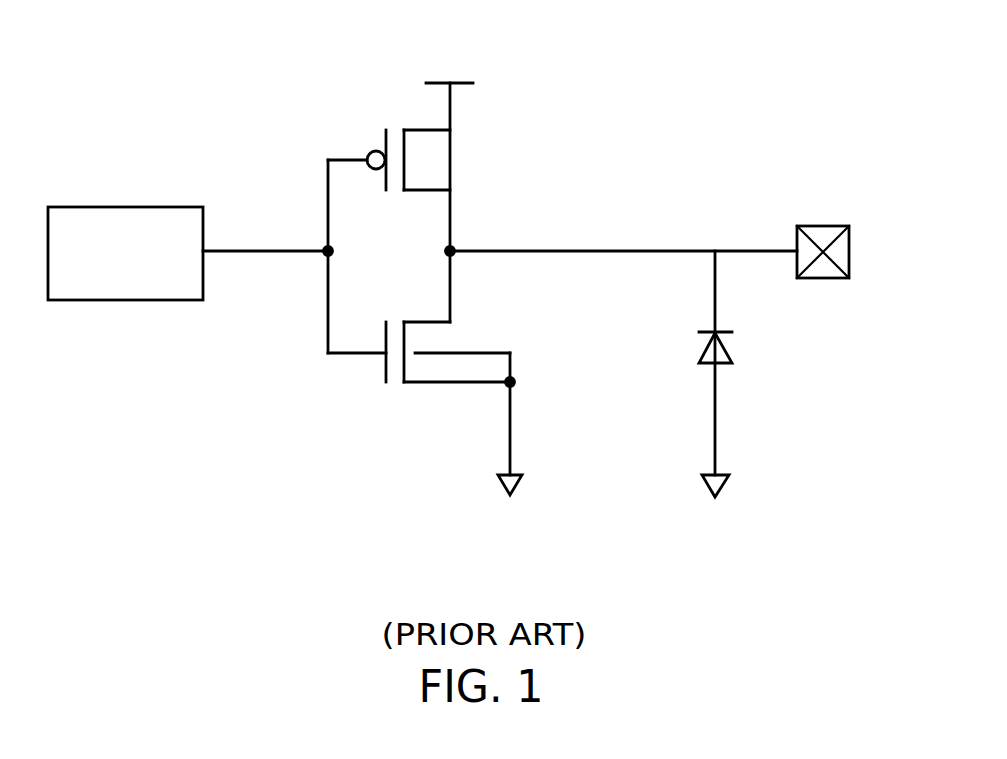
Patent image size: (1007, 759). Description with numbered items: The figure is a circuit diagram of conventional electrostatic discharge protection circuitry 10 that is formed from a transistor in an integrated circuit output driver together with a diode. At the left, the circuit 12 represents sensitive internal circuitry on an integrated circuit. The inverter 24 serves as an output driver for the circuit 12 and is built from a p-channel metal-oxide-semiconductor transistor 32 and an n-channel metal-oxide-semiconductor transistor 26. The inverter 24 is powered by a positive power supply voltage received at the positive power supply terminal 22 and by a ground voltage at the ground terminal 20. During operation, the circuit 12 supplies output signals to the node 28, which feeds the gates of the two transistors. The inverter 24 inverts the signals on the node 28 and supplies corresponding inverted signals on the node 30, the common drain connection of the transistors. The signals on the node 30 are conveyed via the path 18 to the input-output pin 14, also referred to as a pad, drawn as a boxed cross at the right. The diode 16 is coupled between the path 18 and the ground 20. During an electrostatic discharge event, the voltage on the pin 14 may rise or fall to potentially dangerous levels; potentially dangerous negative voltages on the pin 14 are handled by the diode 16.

The electrostatic discharge protection circuitry 10 is at (812, 116).
The circuit 12 is at (122, 207).
The input-output pin 14 is at (850, 250).
The diode 16 is at (744, 357).
The path 18 is at (670, 250).
The ground terminal 20 is at (518, 485).
The positive power supply terminal 22 is at (445, 82).
The inverter 24 is at (458, 273).
The NMOS transistor 26 is at (428, 407).
The node 28 is at (327, 254).
The node 30 is at (452, 249).
The PMOS transistor 32 is at (366, 135).